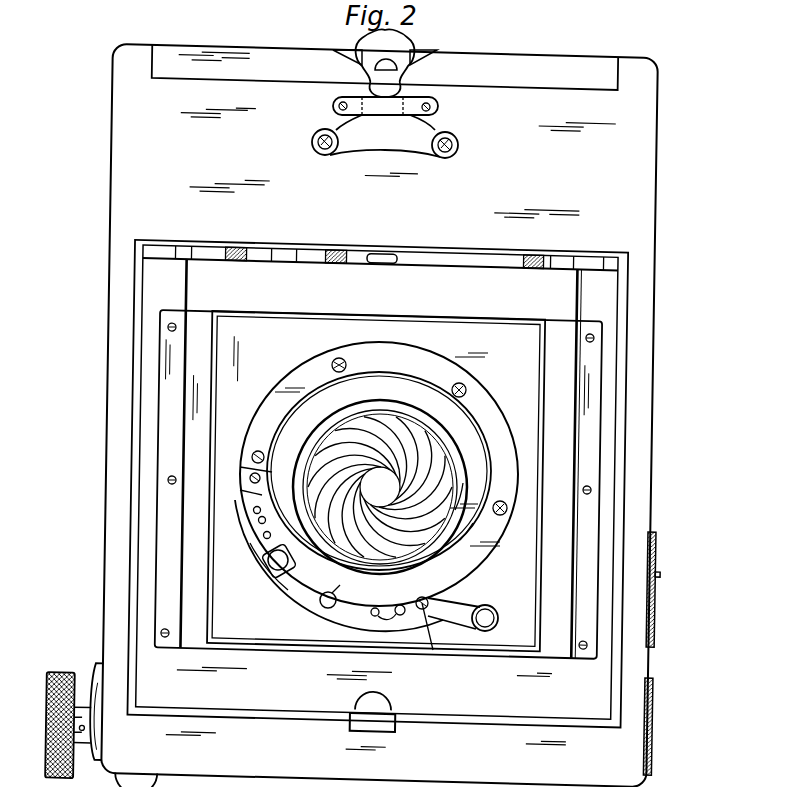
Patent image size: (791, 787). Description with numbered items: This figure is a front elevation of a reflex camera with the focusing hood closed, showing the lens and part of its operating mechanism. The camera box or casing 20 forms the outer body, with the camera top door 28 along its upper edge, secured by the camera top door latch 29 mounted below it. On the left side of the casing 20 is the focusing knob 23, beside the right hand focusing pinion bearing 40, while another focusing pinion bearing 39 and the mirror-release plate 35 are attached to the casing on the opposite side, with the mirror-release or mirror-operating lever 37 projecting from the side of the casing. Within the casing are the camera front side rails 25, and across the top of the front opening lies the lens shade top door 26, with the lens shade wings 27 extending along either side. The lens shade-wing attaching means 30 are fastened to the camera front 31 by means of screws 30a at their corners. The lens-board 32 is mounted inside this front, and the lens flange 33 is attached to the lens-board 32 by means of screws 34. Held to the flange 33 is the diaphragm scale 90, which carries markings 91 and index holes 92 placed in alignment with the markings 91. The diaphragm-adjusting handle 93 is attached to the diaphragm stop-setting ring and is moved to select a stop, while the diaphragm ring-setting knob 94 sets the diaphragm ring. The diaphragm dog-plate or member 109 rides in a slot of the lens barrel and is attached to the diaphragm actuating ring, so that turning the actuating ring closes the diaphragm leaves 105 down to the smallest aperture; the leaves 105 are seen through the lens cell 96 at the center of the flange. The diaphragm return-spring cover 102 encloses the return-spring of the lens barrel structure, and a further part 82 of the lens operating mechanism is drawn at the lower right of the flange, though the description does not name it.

The camera box or casing 20 is at (647, 171).
The focusing knob 23 is at (47, 755).
The camera front side rails 25 is at (660, 428).
The lens shade top door 26 is at (390, 250).
The lens shade wings 27 is at (577, 292).
The camera top door 28 is at (512, 66).
The camera top door latch 29 is at (447, 158).
The lens shade-wing attaching means 30 is at (565, 390).
The screws 30a is at (583, 650).
The camera front 31 is at (608, 667).
The lens-board 32 is at (466, 335).
The lens flange 33 is at (480, 407).
The screws 34 is at (440, 622).
The mirror-release plate 35 is at (656, 535).
The mirror-release or mirror-operating lever 37 is at (661, 574).
The focusing pinion bearing 39 is at (653, 702).
The right hand focusing pinion bearing 40 is at (102, 663).
The lever knob 82 is at (498, 625).
The diaphragm scale 90 is at (243, 483).
The markings 91 is at (440, 618).
The index holes 92 is at (305, 593).
The diaphragm-adjusting handle 93 is at (275, 572).
The diaphragm ring-setting knob 94 is at (316, 608).
The lens cell 96 is at (463, 483).
The diaphragm return-spring cover 102 is at (473, 523).
The diaphragm leaves 105 is at (393, 548).
The diaphragm dog-plate or member 109 is at (361, 623).